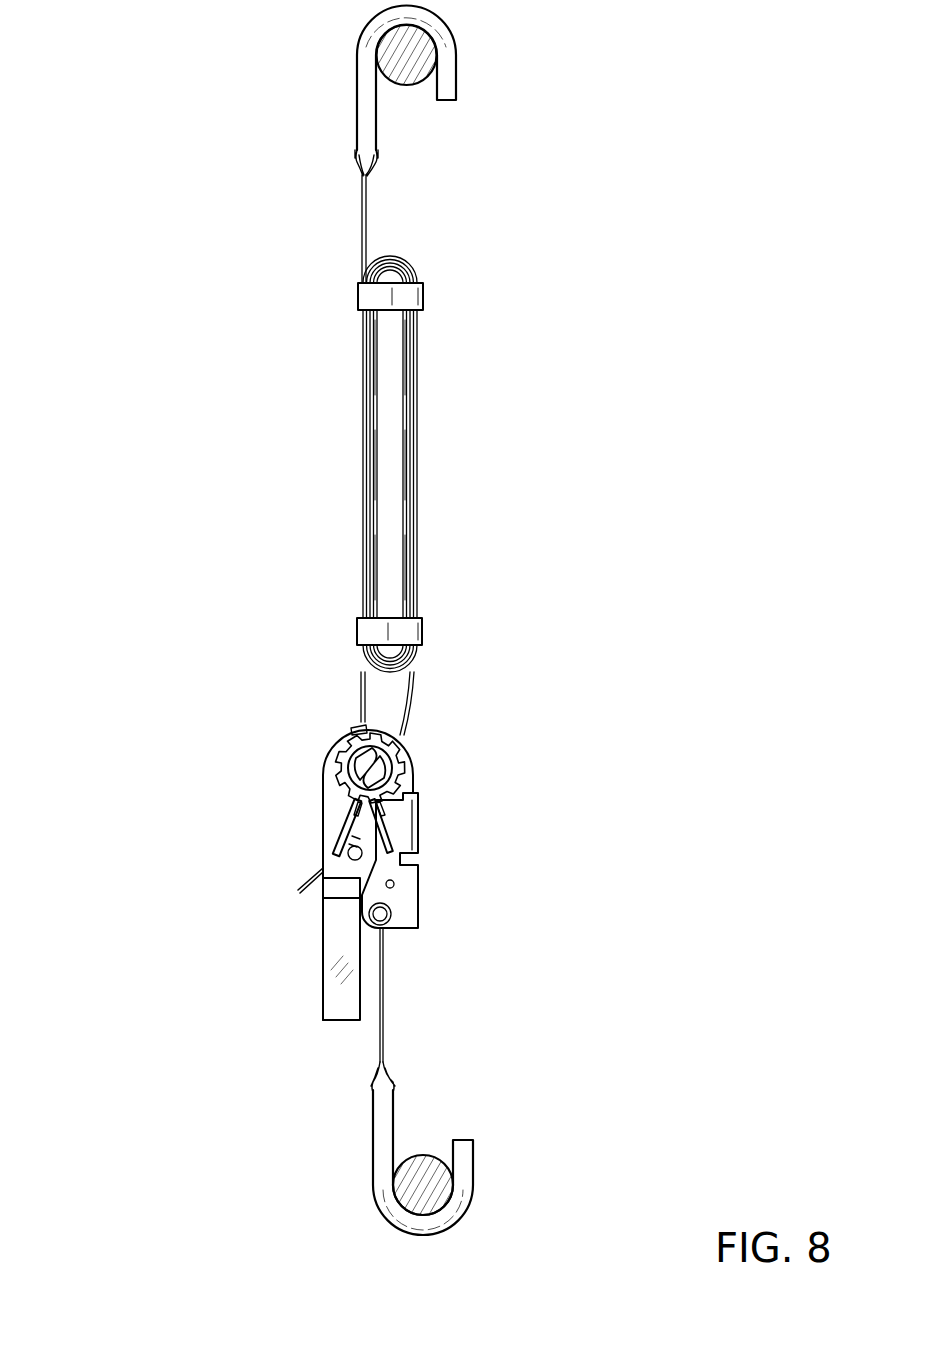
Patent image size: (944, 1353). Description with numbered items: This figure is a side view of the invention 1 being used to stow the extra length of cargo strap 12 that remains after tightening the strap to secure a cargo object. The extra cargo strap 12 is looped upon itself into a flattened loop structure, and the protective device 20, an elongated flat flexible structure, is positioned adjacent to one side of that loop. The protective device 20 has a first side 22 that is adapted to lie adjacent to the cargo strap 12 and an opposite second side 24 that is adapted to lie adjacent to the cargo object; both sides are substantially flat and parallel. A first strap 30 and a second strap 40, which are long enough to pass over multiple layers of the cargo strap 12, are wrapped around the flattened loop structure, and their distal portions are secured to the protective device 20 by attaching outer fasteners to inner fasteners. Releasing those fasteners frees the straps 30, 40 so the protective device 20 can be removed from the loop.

The tie-down assembly 1 is at (140, 165).
The cargo strap 12 is at (362, 417).
The protective device 20 is at (420, 495).
The first side 22 is at (412, 553).
The second side 24 is at (420, 465).
The first strap 30 is at (420, 283).
The second strap 40 is at (413, 645).